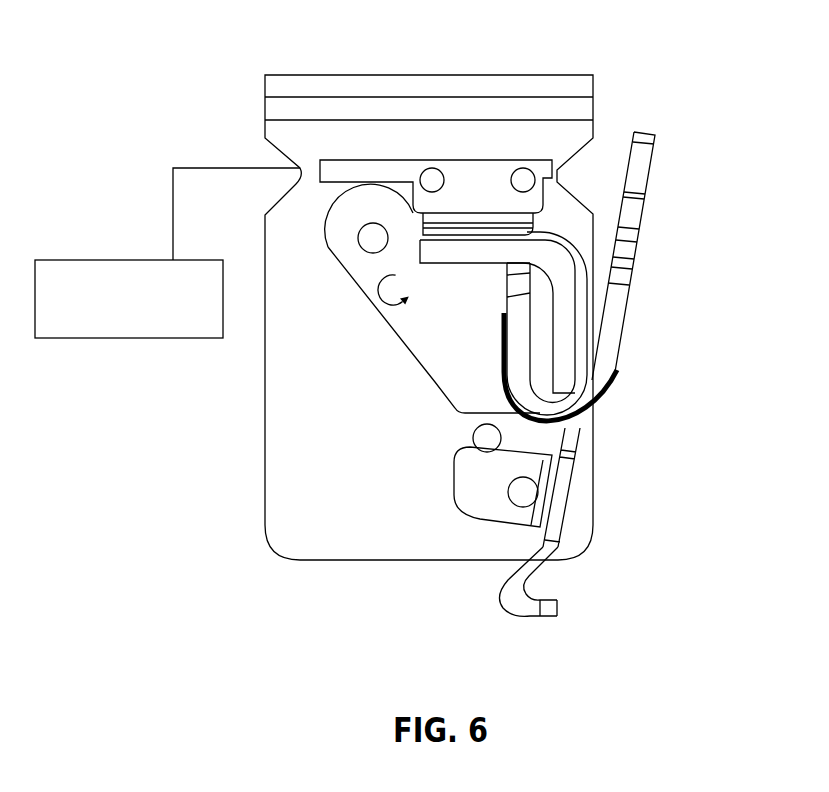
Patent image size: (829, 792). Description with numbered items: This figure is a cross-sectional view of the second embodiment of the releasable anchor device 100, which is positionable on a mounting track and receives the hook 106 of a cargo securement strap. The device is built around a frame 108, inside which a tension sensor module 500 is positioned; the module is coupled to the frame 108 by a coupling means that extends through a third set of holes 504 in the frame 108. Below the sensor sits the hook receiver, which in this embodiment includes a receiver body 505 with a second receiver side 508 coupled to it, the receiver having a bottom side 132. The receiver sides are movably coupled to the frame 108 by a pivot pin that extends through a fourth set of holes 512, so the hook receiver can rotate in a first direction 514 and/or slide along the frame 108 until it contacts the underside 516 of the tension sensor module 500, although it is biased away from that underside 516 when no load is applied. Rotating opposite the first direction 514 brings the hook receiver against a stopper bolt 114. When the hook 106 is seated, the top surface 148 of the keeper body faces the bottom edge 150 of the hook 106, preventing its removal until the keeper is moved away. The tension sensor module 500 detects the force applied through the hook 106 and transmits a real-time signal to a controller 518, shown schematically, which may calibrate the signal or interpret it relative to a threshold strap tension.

The releasable anchor device 100 is at (178, 57).
The hook 106 is at (619, 322).
The frame 108 is at (267, 446).
The stopper bolt 114 is at (473, 437).
The bottom side 132 is at (468, 263).
The top surface 148 is at (588, 432).
The bottom edge 150 is at (600, 418).
The tension sensor module 500 is at (348, 170).
The third set of holes 504 is at (533, 168).
The receiver body 505 is at (548, 262).
The second receiver side 508 is at (437, 383).
The fourth set of holes 512 is at (358, 244).
The first direction 514 is at (378, 293).
The underside 516 is at (488, 235).
The controller 518 is at (78, 338).